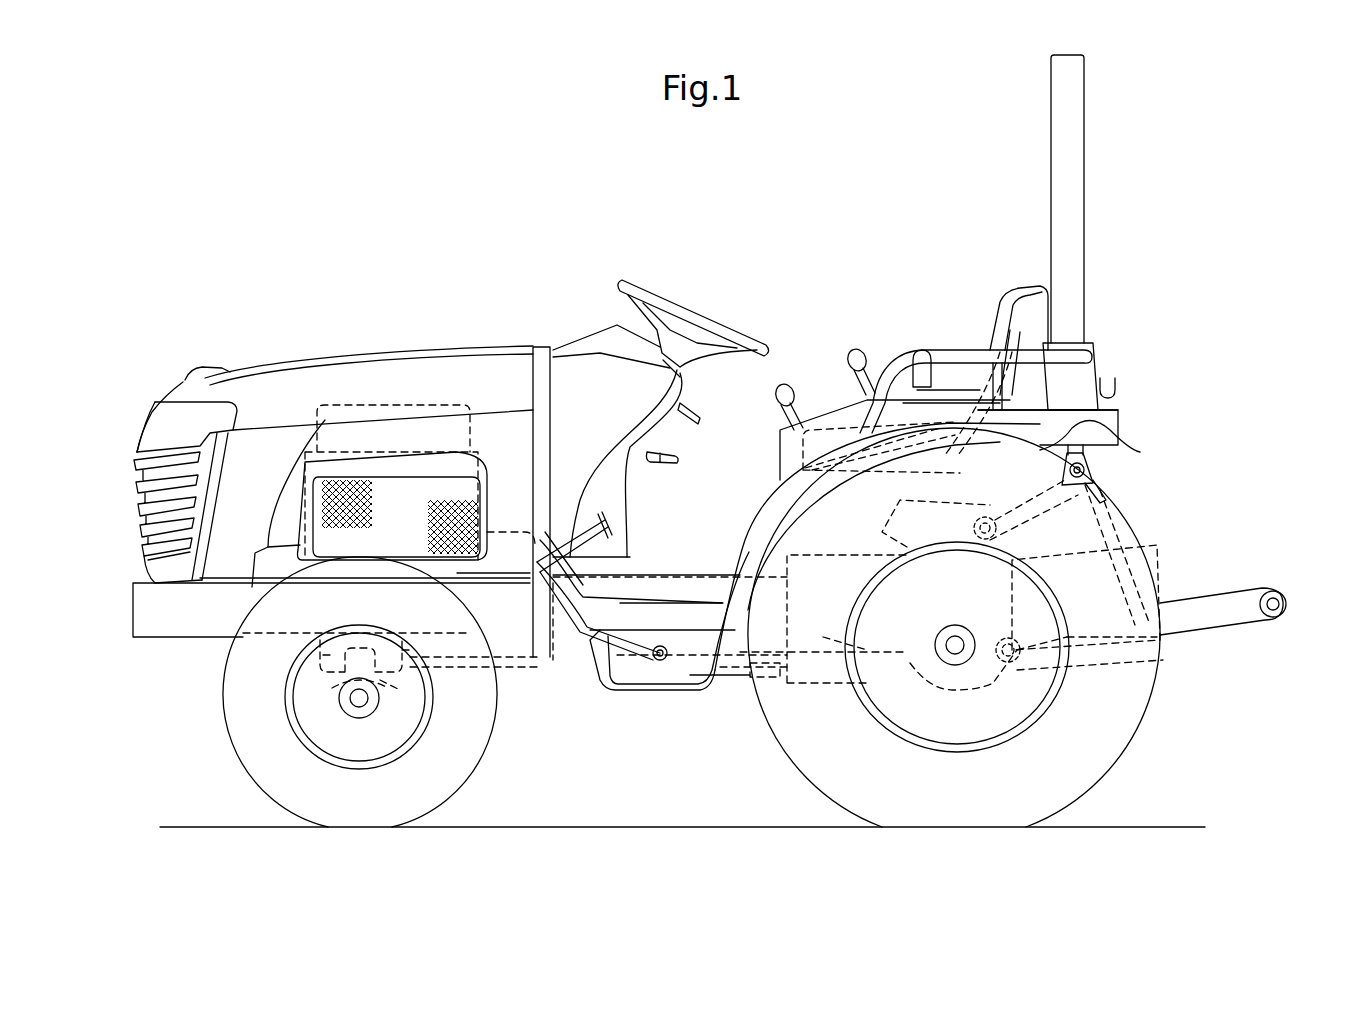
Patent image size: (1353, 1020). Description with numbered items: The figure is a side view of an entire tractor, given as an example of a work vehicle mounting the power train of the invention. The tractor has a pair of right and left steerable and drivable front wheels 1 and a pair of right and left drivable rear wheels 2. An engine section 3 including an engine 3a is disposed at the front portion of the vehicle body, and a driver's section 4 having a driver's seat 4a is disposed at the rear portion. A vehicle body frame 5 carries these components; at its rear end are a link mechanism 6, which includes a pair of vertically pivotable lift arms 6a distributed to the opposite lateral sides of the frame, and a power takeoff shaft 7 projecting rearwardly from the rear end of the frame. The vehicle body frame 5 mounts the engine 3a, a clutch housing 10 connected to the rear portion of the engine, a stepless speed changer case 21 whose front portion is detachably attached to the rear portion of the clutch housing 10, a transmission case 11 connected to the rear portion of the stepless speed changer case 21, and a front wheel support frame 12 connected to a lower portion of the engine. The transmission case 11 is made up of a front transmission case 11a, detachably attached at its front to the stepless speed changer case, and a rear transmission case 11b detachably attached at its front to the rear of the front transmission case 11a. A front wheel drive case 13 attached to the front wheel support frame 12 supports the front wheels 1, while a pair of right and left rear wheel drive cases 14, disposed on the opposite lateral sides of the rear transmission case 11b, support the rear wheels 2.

The front wheel 1 is at (228, 740).
The rear wheel 2 is at (1130, 750).
The engine section 3 is at (287, 360).
The engine 3a is at (386, 405).
The driver's section 4 is at (758, 262).
The driver's seat 4a is at (990, 320).
The vehicle body frame 5 is at (927, 362).
The link mechanism 6 is at (1214, 596).
The lift arm 6a is at (1120, 445).
The power takeoff (PTO) shaft 7 is at (1055, 595).
The clutch housing 10 is at (507, 627).
The transmission case 11 is at (771, 624).
The front transmission case 11a is at (693, 640).
The rear transmission case 11b is at (822, 640).
The front wheel support frame 12 is at (185, 637).
The front wheel drive case 13 is at (378, 684).
The rear wheel drive case 14 is at (953, 690).
The stepless speed changer case 21 is at (580, 647).